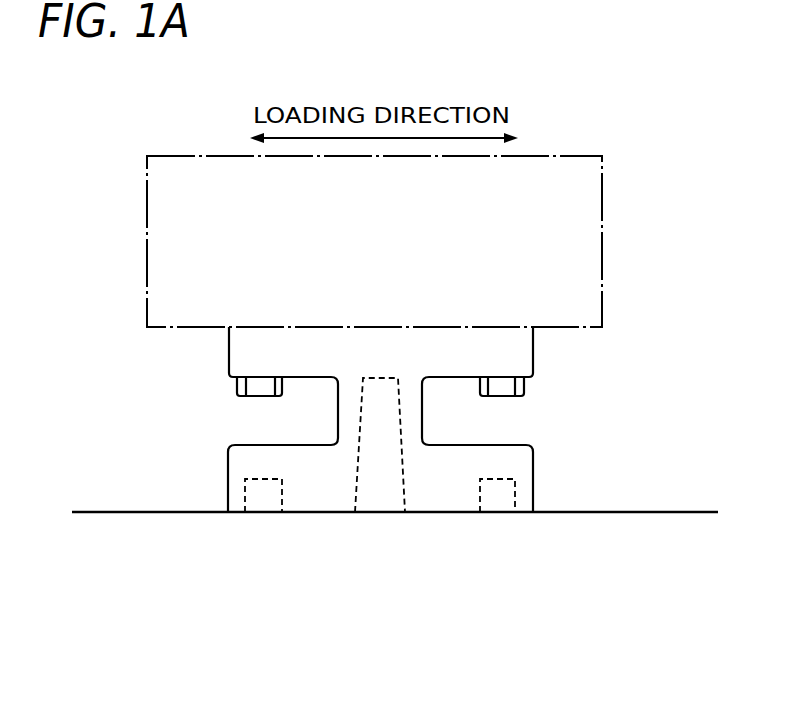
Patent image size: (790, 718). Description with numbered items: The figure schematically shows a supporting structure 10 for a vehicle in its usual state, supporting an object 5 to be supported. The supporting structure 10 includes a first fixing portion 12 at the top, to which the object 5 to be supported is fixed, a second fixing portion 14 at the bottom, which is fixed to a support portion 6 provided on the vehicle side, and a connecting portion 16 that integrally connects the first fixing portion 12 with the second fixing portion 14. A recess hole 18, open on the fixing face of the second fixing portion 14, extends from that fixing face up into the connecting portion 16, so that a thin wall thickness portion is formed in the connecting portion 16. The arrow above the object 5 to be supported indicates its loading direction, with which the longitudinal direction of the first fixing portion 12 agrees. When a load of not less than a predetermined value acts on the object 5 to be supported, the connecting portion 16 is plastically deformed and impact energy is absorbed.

The object to be supported 5 is at (587, 190).
The support portion 6 is at (608, 527).
The supporting structure 10 is at (475, 417).
The first fixing portion 12 is at (517, 357).
The second fixing portion 14 is at (449, 472).
The connecting portion 16 is at (417, 420).
The recess hole 18 is at (380, 512).